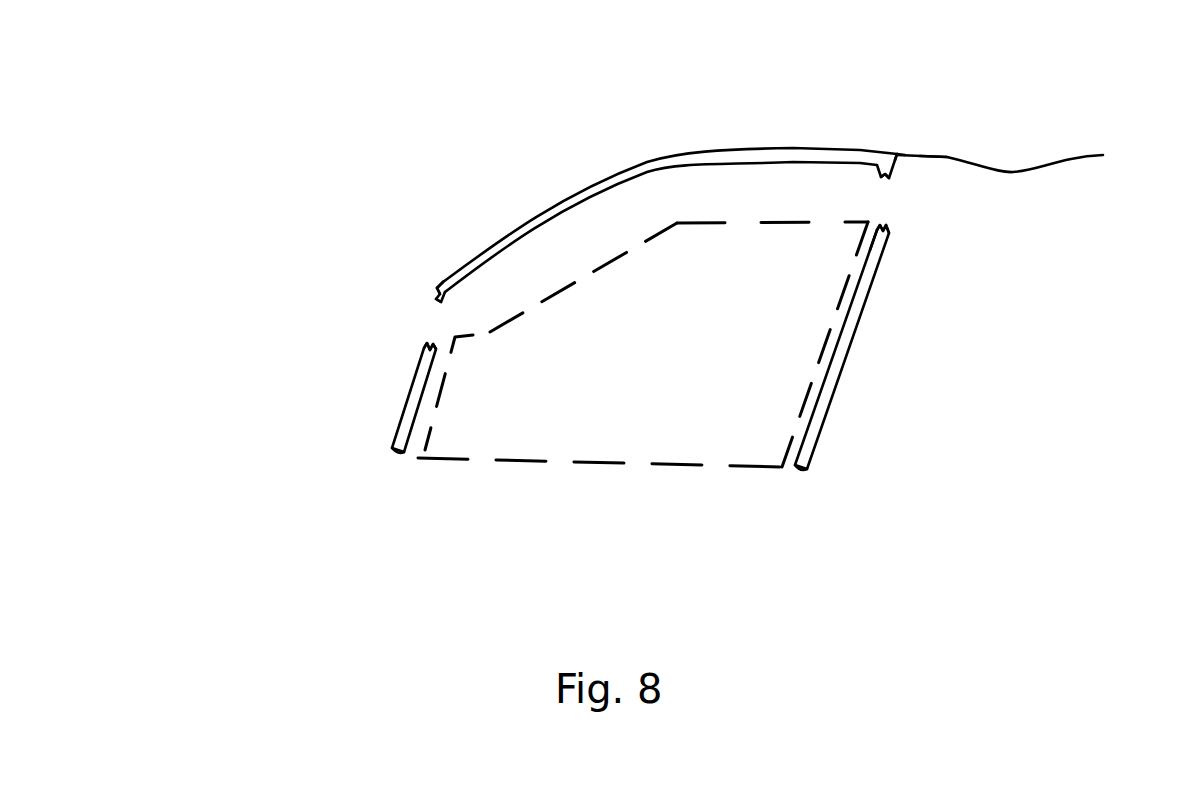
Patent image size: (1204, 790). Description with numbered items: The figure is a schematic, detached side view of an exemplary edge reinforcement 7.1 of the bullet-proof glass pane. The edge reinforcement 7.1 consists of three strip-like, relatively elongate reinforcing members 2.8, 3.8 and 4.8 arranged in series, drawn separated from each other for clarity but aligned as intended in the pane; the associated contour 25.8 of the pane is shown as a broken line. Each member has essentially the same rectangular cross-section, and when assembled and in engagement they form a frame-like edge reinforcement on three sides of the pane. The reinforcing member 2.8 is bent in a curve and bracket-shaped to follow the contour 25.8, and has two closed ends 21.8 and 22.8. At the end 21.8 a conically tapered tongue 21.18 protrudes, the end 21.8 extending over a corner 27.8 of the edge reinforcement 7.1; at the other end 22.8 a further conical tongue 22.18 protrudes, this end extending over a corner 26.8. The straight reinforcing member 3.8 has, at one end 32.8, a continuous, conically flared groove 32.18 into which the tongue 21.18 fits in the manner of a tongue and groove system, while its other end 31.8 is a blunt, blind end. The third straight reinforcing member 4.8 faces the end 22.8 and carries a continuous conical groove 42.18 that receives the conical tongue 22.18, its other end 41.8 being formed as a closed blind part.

The reinforcing member 2.8 is at (685, 157).
The end 21.8 is at (1047, 153).
The corner 27.8 is at (902, 152).
The edge reinforcement 7.1 is at (942, 135).
The tongue 21.18 is at (893, 185).
The reinforcing member 3.8 is at (845, 347).
The groove 32.18 is at (888, 219).
The end 32.8 is at (878, 247).
The end 31.8 is at (802, 470).
The contour 25.8 is at (630, 463).
The reinforcing member 4.8 is at (410, 392).
The end 41.8 is at (403, 460).
The groove 42.18 is at (420, 337).
The end 22.8 is at (422, 285).
The corner 26.8 is at (435, 281).
The tongue 22.18 is at (440, 308).